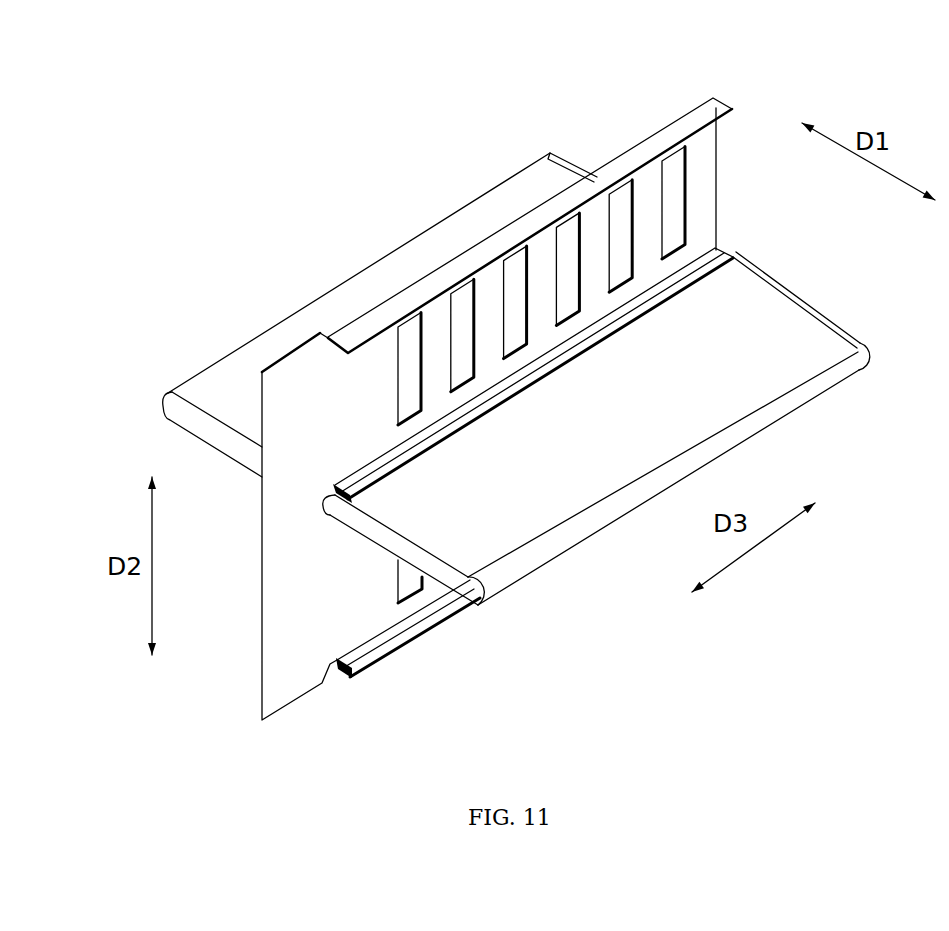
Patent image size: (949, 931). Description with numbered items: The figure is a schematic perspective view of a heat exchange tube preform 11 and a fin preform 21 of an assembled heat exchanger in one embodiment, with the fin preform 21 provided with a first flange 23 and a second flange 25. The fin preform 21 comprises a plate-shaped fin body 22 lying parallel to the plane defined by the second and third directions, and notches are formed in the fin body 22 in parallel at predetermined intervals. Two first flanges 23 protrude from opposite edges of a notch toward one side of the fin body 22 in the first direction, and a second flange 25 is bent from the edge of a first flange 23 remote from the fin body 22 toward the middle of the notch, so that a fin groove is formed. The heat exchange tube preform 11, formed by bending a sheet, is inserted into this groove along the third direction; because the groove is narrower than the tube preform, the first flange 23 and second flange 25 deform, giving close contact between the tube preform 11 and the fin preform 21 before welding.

The heat exchange tube preform 11 is at (516, 401).
The fin preform 21 is at (682, 113).
The fin body 22 is at (292, 582).
The first flange 23 is at (733, 252).
The second flange 25 is at (338, 500).